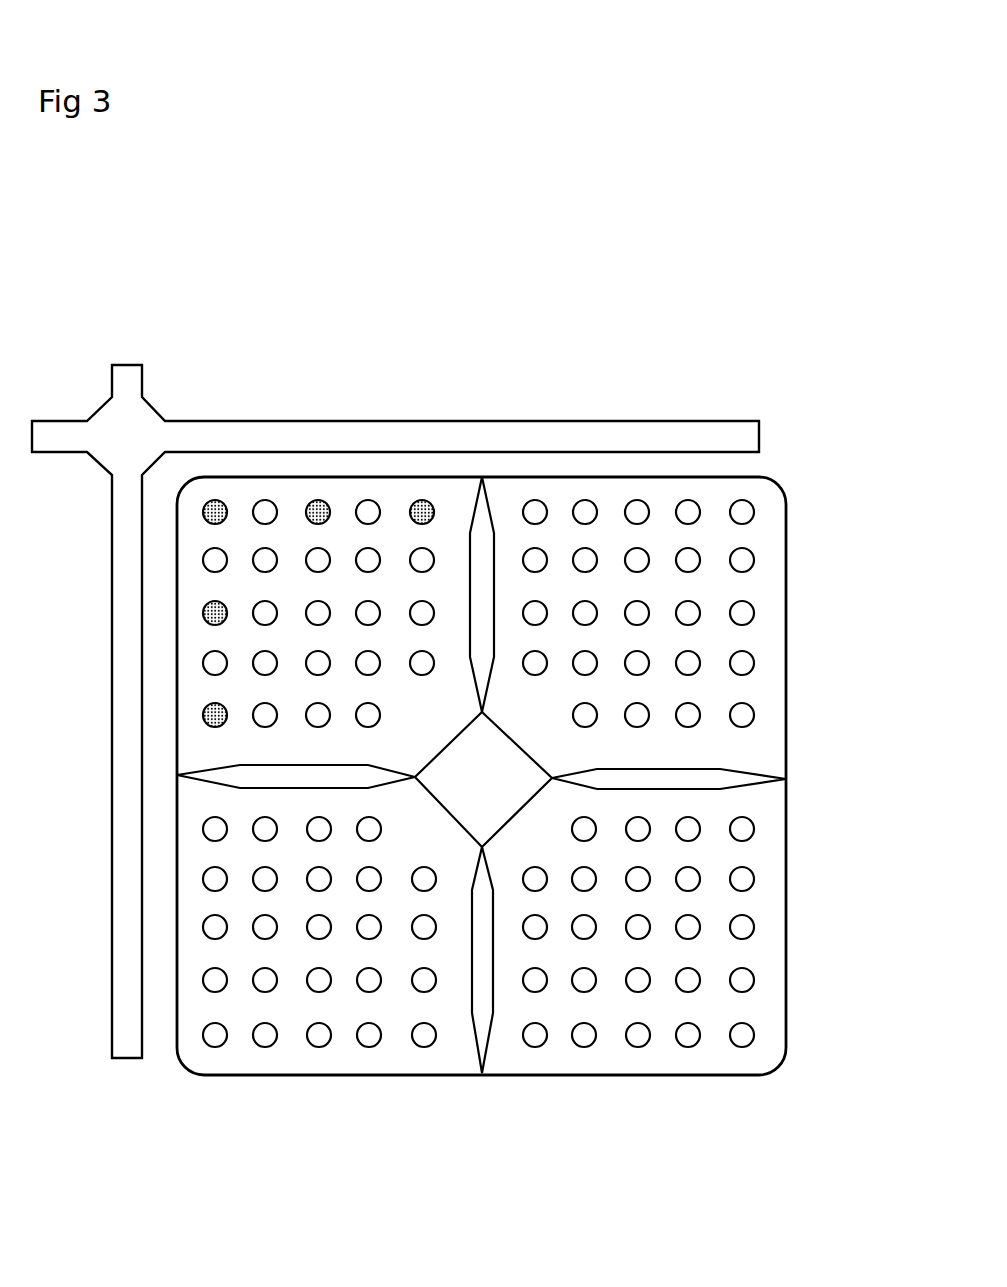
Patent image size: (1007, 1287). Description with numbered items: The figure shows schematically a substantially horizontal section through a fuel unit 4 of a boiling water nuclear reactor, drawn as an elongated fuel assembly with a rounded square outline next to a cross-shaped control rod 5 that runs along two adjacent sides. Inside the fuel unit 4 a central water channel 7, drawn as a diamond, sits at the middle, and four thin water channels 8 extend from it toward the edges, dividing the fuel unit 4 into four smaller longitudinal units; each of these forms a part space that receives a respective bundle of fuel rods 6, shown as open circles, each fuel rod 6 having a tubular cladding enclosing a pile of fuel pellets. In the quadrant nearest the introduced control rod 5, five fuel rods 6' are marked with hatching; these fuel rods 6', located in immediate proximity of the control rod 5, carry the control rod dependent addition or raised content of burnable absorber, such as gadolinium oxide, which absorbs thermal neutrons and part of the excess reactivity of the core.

The fuel unit 4 is at (788, 508).
The control rod 5 is at (643, 433).
The fuel rod 6 is at (531, 773).
The fuel rod with control rod dependent addition of burnable absorber 6' is at (233, 533).
The central water channel 7 is at (478, 758).
The thin water channel 8 is at (480, 583).